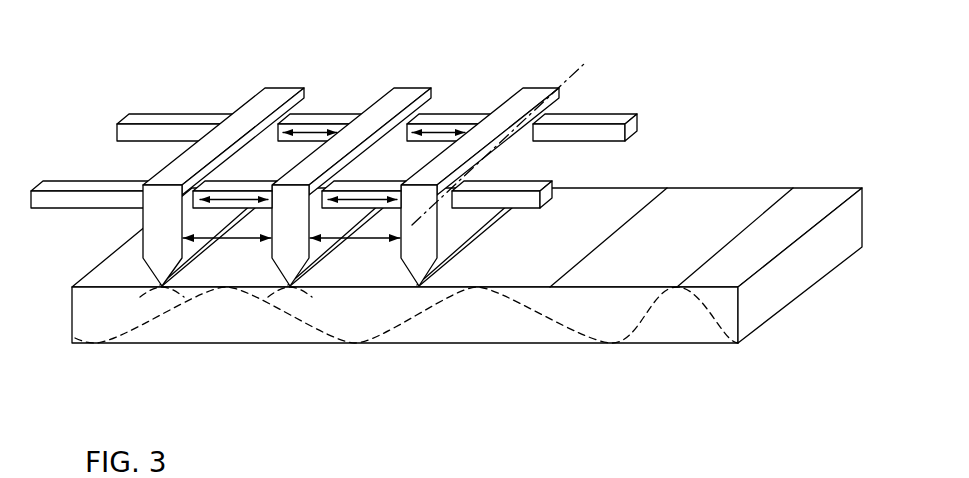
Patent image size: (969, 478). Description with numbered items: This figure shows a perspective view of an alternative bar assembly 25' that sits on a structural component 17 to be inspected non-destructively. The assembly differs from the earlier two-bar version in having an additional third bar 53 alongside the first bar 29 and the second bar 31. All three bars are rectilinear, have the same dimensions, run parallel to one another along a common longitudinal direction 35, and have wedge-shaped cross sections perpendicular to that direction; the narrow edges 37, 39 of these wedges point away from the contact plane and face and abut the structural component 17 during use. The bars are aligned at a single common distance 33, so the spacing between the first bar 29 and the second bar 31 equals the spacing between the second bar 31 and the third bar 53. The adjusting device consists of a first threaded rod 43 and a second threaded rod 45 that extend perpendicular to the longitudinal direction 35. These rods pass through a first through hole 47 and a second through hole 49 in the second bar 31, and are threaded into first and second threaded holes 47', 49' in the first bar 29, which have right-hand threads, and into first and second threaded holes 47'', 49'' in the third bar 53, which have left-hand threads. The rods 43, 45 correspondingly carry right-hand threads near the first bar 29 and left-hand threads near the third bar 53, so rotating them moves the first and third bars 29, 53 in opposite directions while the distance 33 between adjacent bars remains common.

The structural component 17 is at (698, 340).
The alternative bar assembly 25' is at (336, 143).
The first bar 29 is at (281, 88).
The second bar 31 is at (411, 88).
The distance 33 is at (236, 242).
The longitudinal direction 35 is at (598, 67).
The narrow edge 37 is at (145, 288).
The narrow edge 39 is at (290, 288).
The first threaded rod 43 is at (67, 181).
The second threaded rod 45 is at (141, 113).
The first through hole 47 is at (359, 287).
The first threaded hole 47' is at (172, 213).
The first threaded hole 47'' is at (541, 179).
The second through hole 49 is at (453, 98).
The second threaded hole 49' is at (326, 97).
The second threaded hole 49'' is at (585, 107).
The third bar 53 is at (539, 88).